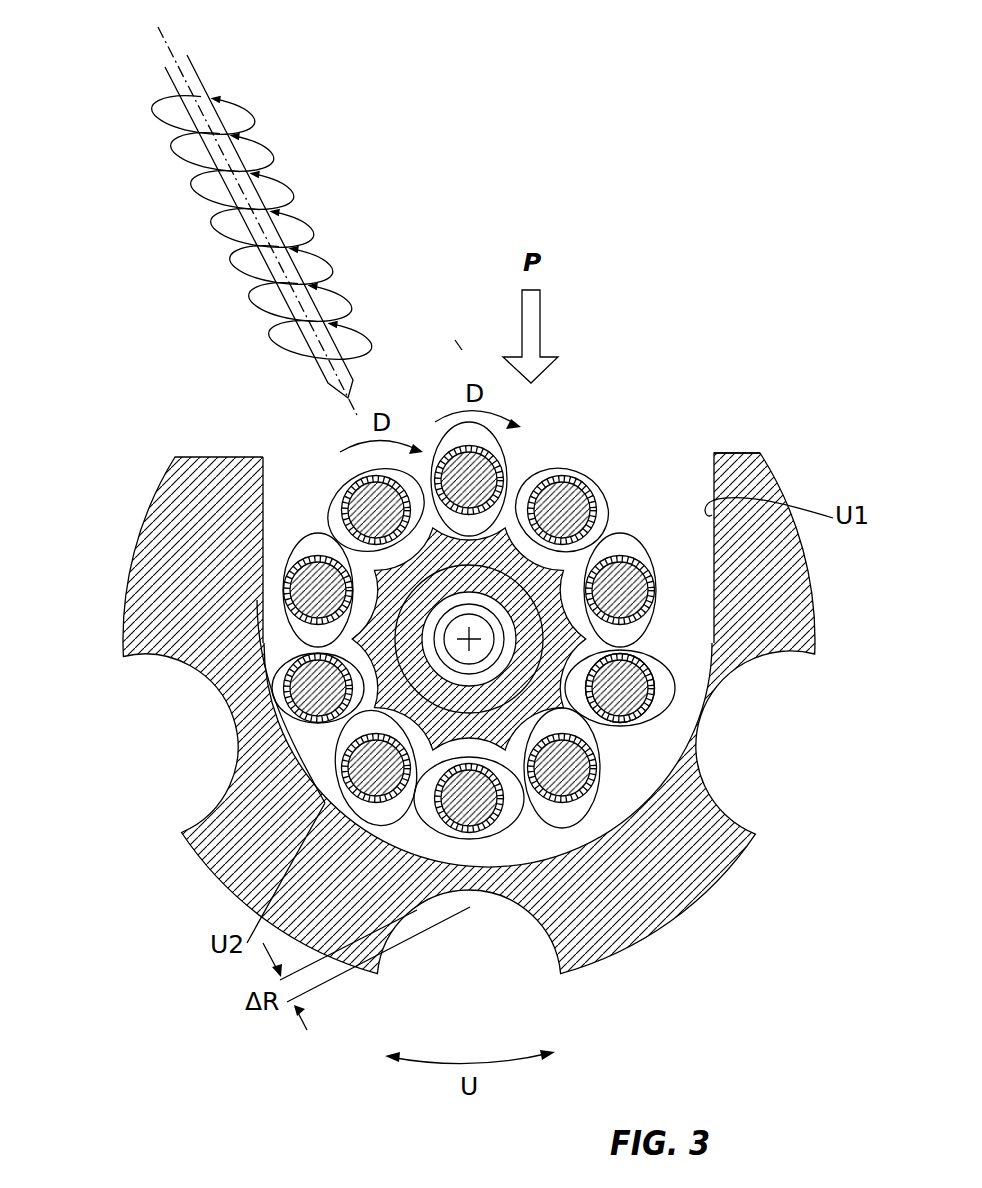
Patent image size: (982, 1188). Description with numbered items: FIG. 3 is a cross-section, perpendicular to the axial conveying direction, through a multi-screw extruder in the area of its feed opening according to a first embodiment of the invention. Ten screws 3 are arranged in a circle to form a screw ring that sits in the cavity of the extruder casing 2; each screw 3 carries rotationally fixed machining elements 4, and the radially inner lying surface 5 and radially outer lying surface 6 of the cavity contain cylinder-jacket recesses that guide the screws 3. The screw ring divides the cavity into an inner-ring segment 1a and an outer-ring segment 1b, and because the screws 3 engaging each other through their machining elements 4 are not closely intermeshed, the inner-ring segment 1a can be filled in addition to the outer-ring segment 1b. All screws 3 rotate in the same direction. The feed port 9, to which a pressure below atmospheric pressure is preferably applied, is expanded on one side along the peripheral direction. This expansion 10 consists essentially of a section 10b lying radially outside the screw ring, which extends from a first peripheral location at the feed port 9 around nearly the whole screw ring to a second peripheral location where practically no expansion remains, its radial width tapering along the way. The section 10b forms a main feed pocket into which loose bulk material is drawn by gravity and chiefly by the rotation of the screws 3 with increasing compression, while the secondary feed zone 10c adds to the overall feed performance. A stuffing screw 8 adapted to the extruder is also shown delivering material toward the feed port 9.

The inner-ring segment 1a is at (350, 604).
The outer-ring segment 1b is at (297, 733).
The extruder casing 2 is at (657, 877).
The screws 3 is at (640, 718).
The machining elements 4 is at (663, 700).
The radially inner lying surface 5 is at (575, 606).
The radially outer lying surface 6 is at (712, 596).
The stuffing screw 8 is at (202, 88).
The feed port 9 is at (456, 341).
The expansion 10 is at (434, 674).
The section of the expansion lying radially outside the screw ring 10b is at (647, 773).
The secondary feed zone 10c is at (290, 525).